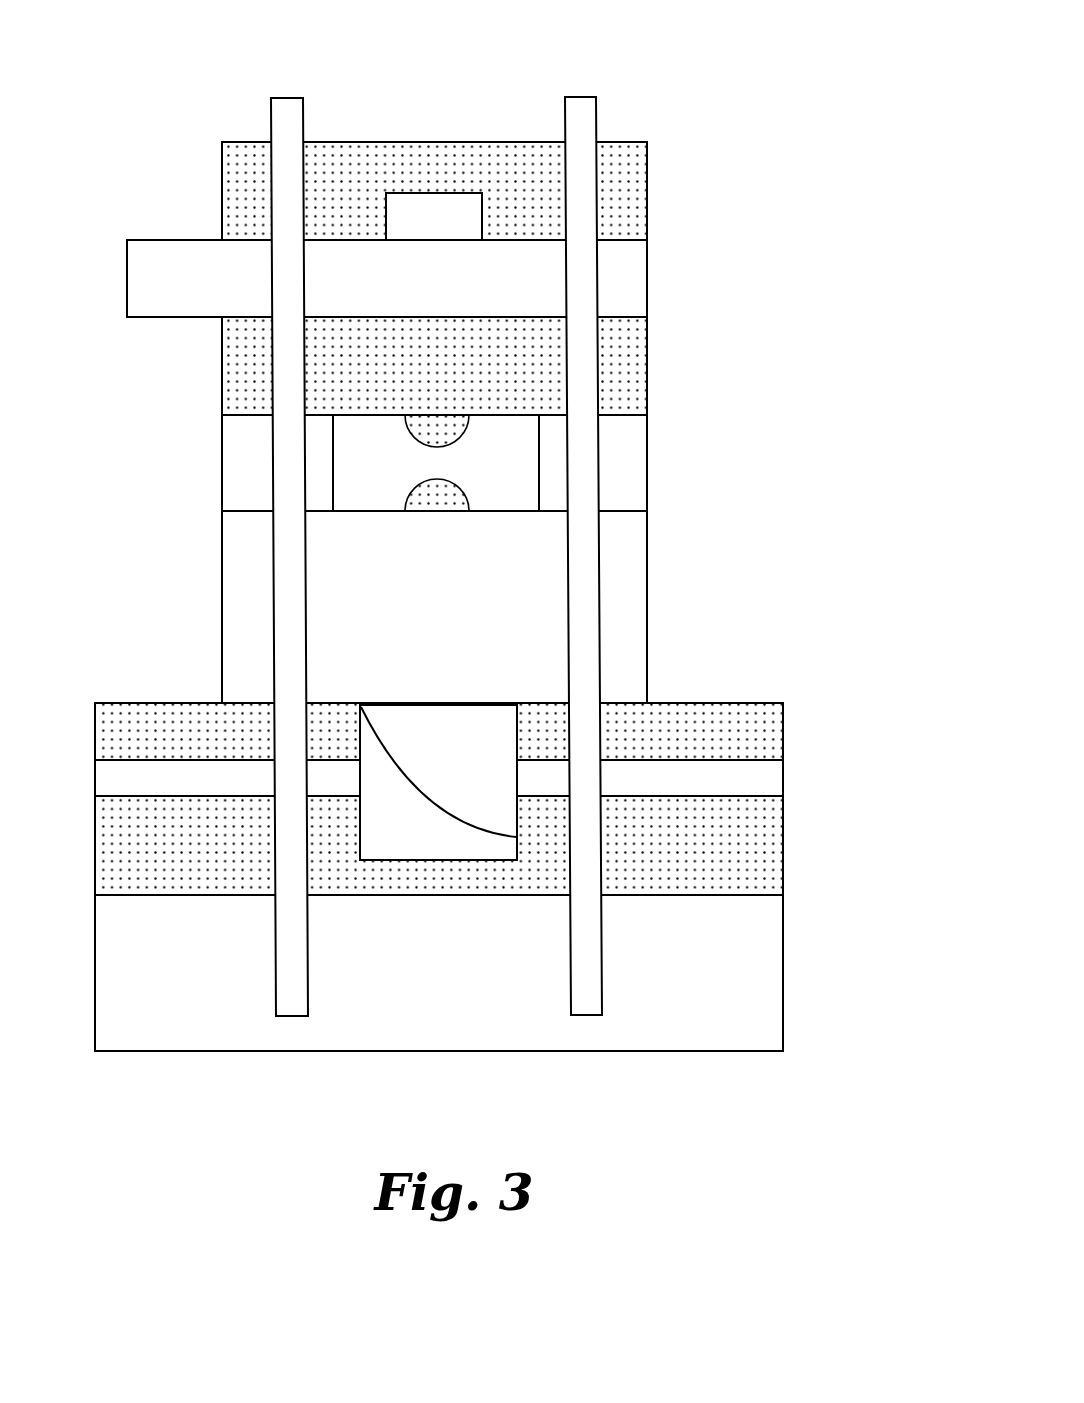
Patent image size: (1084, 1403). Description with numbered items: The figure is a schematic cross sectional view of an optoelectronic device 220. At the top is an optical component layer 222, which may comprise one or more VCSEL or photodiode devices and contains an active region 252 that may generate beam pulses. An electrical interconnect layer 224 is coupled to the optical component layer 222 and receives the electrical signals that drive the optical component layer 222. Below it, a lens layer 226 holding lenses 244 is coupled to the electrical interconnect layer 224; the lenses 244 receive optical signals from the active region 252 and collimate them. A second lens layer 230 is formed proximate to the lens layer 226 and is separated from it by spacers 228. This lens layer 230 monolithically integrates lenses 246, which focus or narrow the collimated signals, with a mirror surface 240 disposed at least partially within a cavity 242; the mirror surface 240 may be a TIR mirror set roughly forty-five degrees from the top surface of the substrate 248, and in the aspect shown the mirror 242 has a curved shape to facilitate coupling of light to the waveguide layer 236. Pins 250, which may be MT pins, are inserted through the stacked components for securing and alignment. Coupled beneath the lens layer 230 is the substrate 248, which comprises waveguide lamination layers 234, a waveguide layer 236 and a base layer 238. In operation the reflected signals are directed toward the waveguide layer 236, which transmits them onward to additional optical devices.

The optoelectronic device 220 is at (208, 74).
The optical component layer 222 is at (646, 189).
The electrical interconnect layer 224 is at (647, 277).
The lens layer 226 is at (648, 372).
The spacers 228 is at (648, 463).
The lens layer 230 is at (650, 652).
The waveguide lamination layers 234 is at (783, 727).
The waveguide layer 236 is at (782, 780).
The base layer 238 is at (785, 1010).
The mirror surface 240 is at (475, 826).
The cavity 242 is at (423, 834).
The lenses 244 is at (401, 436).
The lenses 246 is at (401, 493).
The substrate 248 is at (164, 1066).
The pins 250 is at (293, 103).
The active region 252 is at (440, 180).